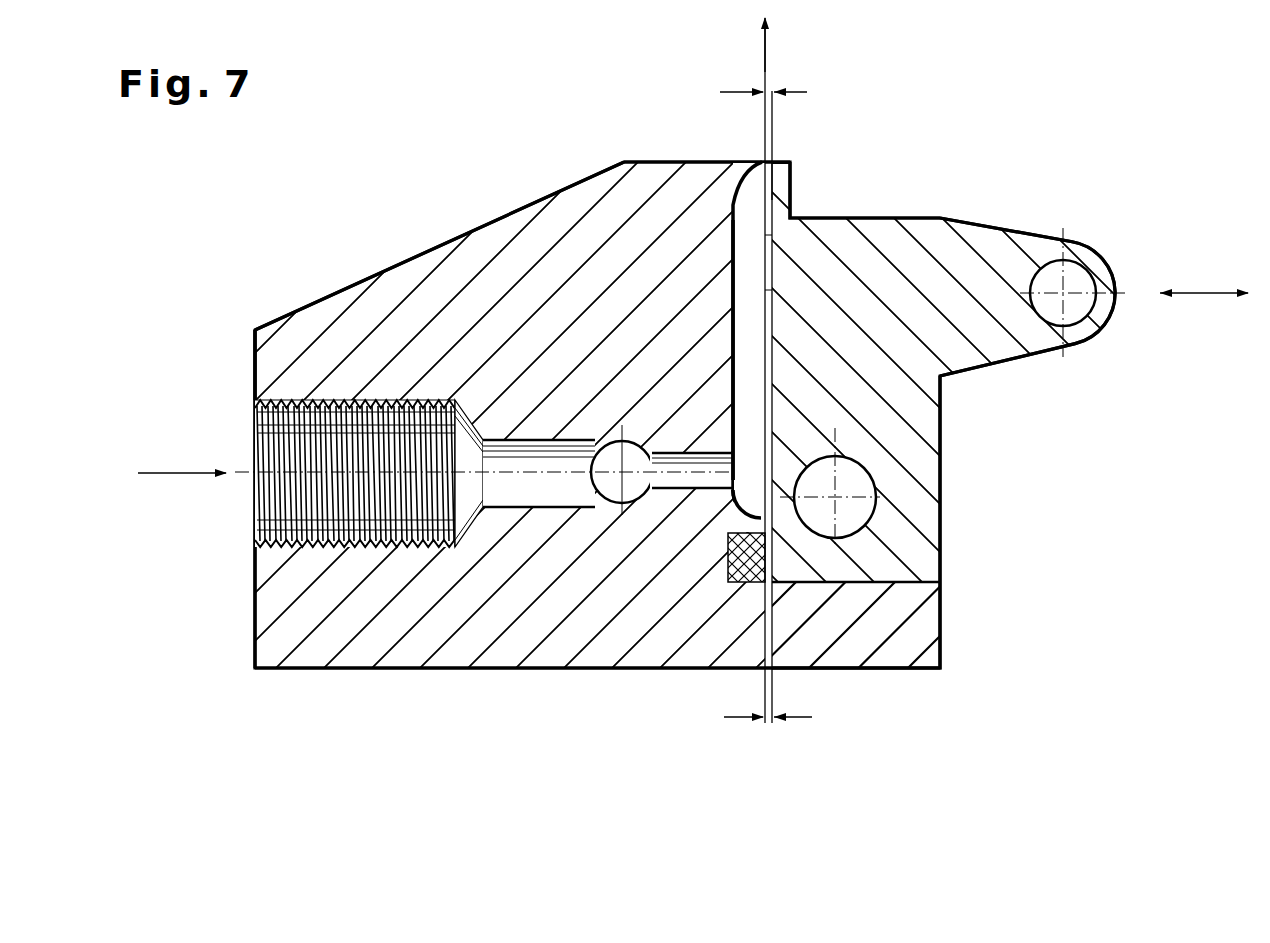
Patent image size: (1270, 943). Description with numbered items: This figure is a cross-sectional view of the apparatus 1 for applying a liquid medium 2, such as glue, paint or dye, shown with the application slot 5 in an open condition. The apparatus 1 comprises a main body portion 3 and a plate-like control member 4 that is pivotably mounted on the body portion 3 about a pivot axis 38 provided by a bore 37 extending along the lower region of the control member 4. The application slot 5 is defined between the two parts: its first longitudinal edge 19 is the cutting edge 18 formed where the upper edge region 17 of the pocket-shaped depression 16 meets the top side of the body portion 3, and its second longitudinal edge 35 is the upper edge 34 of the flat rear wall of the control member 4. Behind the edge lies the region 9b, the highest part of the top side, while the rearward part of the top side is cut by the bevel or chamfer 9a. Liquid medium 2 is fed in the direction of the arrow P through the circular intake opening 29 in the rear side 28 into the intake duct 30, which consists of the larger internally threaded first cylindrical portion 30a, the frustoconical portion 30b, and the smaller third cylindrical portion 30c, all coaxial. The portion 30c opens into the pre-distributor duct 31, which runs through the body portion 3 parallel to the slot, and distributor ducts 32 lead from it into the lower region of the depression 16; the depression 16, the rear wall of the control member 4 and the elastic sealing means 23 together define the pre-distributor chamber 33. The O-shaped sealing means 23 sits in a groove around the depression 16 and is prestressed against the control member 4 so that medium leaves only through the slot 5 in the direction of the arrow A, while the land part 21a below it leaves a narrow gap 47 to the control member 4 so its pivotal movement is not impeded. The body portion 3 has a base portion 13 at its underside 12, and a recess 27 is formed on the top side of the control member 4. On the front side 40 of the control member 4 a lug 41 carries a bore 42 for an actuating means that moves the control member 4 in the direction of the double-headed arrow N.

The apparatus 1 is at (335, 188).
The liquid medium 2 is at (256, 523).
The main body portion 3 is at (485, 253).
The control member 4 is at (912, 392).
The application slot 5 is at (768, 92).
The bevel or chamfer 9a is at (338, 293).
The region immediately behind the first longitudinal edge 9b is at (650, 162).
The underside 12 is at (540, 675).
The base portion 13 is at (900, 670).
The pocket-shaped depression 16 is at (748, 243).
The upper edge region 17 is at (755, 163).
The edge 18 is at (760, 163).
The first longitudinal edge 19 is at (763, 163).
The land part 21a is at (742, 520).
The elastic sealing means 23 is at (745, 585).
The recess 27 is at (832, 185).
The rear side 28 is at (253, 360).
The intake opening 29 is at (255, 438).
The intake duct 30 is at (385, 570).
The first cylindrical portion 30a is at (340, 550).
The frustoconical portion 30b is at (470, 510).
The third cylindrical portion 30c is at (530, 500).
The pre-distributor duct 31 is at (603, 500).
The distributor ducts 32 is at (680, 485).
The pre-distributor chamber 33 is at (752, 290).
The upper edge 34 is at (795, 170).
The second longitudinal edge 35 is at (775, 165).
The bore 37 is at (862, 508).
The pivot axis 38 is at (860, 483).
The front side 40 is at (945, 523).
The lug 41 is at (1007, 340).
The bore 42 is at (1078, 275).
The narrow gap 47 is at (768, 720).
The arrow A is at (764, 55).
The arrow P is at (172, 473).
The double-headed arrow N is at (1205, 293).